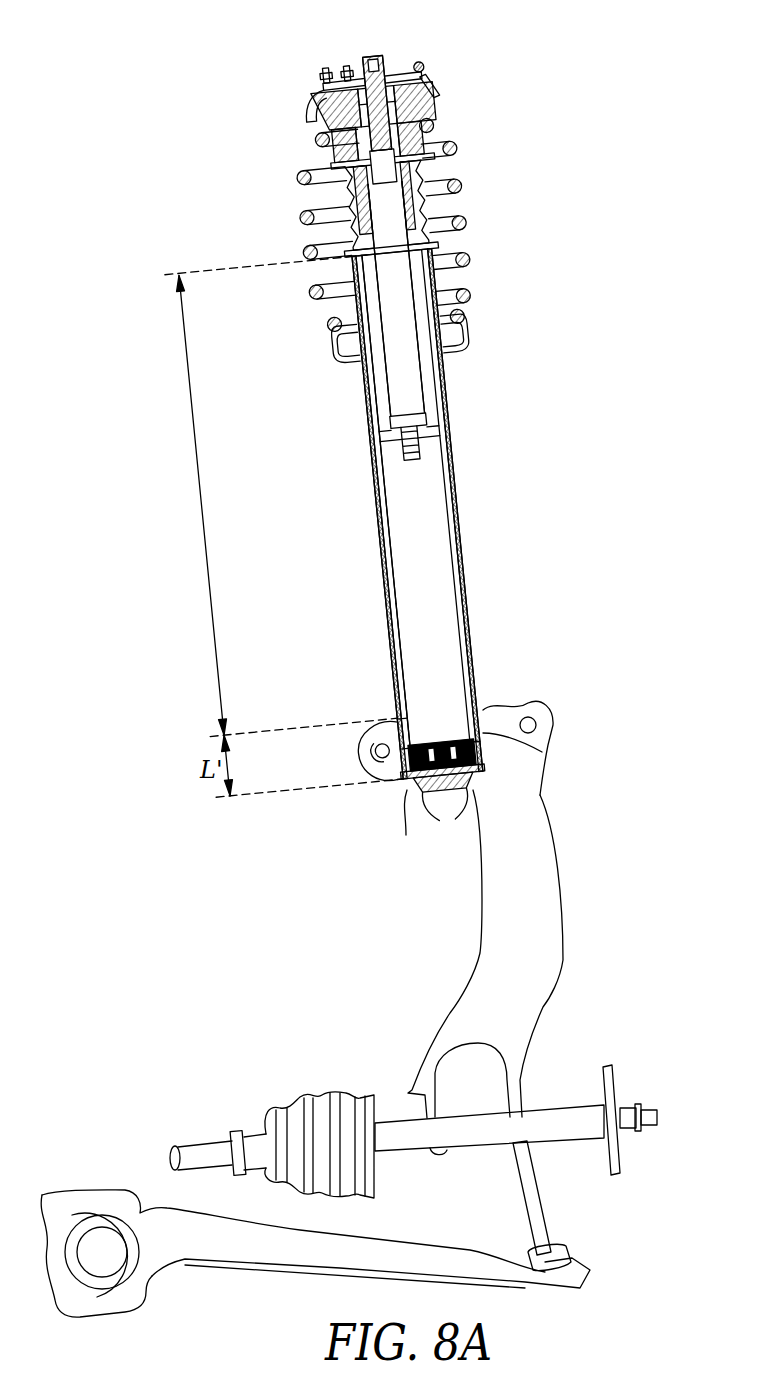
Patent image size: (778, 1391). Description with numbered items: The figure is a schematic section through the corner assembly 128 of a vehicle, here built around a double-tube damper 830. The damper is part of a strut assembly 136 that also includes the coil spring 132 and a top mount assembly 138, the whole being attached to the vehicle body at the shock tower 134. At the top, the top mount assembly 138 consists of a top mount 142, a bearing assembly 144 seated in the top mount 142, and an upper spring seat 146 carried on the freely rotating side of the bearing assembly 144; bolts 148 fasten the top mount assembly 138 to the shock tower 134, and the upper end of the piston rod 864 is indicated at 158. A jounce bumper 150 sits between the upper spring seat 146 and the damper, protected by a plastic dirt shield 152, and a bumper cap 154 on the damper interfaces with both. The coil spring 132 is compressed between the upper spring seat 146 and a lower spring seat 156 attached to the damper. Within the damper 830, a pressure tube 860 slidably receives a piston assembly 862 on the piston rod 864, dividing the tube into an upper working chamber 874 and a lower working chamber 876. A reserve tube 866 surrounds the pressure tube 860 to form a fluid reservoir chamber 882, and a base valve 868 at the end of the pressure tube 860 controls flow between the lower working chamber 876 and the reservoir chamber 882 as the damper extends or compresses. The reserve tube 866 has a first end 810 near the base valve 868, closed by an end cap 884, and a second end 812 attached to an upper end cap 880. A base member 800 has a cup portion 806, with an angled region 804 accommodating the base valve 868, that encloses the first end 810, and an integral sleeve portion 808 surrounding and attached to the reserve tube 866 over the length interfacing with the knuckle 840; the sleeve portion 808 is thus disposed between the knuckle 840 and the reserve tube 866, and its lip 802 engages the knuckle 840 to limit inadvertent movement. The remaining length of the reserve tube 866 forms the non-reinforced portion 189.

The corner assembly 128 is at (622, 113).
The coil spring 132 is at (458, 148).
The shock tower 134 is at (440, 100).
The strut assembly 136 is at (318, 366).
The top mount assembly 138 is at (422, 48).
The top mount 142 is at (300, 124).
The bearing assembly 144 is at (432, 80).
The upper spring seat 146 is at (334, 150).
The bolts 148 is at (327, 88).
The jounce bumper 150 is at (422, 167).
The plastic dirt shield 152 is at (420, 200).
The bumper cap 154 is at (428, 247).
The lower spring seat 156 is at (467, 323).
The piston rod end 158 is at (388, 90).
The non-reinforced portion 189 is at (279, 527).
The base member 800 is at (380, 726).
The lip 802 is at (484, 720).
The angled region 804 is at (477, 798).
The cup portion 806 is at (425, 781).
The sleeve portion 808 is at (541, 748).
The first end 810 is at (388, 805).
The second end 812 is at (320, 231).
The double-tube damper 830 is at (358, 587).
The knuckle 840 is at (520, 1085).
The pressure tube 860 is at (445, 378).
The piston assembly 862 is at (427, 420).
The piston rod 864 is at (402, 384).
The reserve tube 866 is at (393, 660).
The base valve 868 is at (403, 715).
The upper working chamber 874 is at (446, 396).
The lower working chamber 876 is at (448, 468).
The upper end cap 880 is at (365, 252).
The fluid reservoir chamber 882 is at (380, 549).
The end cap 884 is at (412, 790).